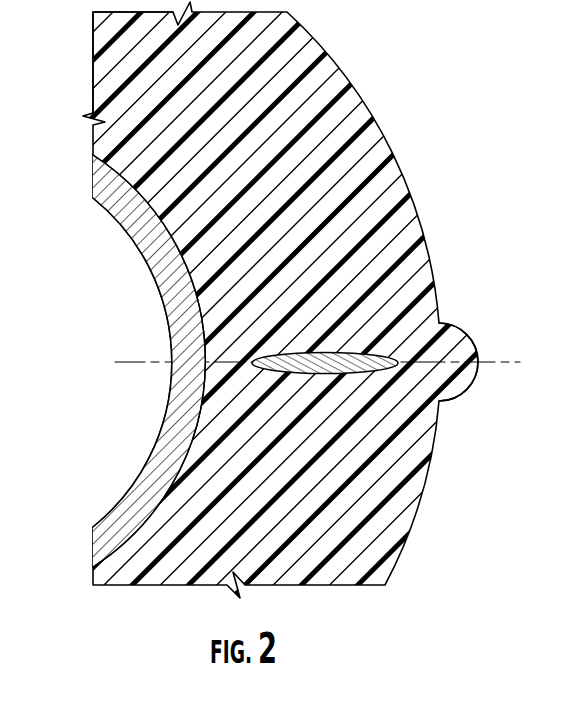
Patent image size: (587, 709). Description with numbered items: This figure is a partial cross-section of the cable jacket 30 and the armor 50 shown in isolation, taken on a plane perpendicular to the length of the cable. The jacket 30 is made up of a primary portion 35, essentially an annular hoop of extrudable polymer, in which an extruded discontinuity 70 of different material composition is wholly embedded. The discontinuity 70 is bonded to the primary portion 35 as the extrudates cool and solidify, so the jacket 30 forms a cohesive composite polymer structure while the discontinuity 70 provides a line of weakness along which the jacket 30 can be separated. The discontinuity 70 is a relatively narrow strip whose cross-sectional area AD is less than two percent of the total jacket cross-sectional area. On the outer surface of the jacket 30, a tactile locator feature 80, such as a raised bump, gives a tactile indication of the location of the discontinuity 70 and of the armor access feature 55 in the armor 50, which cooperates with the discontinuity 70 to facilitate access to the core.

The jacket 30 is at (415, 442).
The primary portion 35 is at (130, 145).
The armor 50 is at (138, 480).
The armor access features 55 is at (192, 352).
The discontinuities 70 is at (357, 352).
The tactile locator features 80 is at (476, 356).
The cross-sectional area of discontinuity AD is at (327, 352).